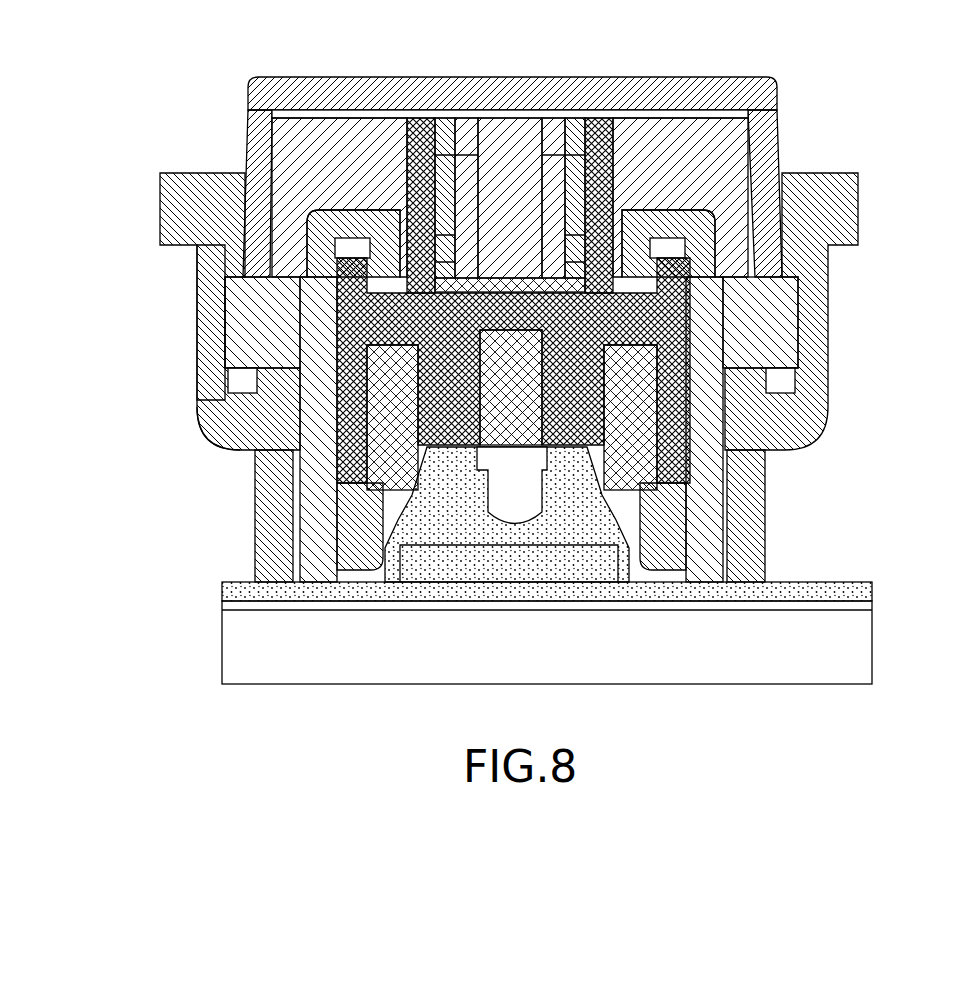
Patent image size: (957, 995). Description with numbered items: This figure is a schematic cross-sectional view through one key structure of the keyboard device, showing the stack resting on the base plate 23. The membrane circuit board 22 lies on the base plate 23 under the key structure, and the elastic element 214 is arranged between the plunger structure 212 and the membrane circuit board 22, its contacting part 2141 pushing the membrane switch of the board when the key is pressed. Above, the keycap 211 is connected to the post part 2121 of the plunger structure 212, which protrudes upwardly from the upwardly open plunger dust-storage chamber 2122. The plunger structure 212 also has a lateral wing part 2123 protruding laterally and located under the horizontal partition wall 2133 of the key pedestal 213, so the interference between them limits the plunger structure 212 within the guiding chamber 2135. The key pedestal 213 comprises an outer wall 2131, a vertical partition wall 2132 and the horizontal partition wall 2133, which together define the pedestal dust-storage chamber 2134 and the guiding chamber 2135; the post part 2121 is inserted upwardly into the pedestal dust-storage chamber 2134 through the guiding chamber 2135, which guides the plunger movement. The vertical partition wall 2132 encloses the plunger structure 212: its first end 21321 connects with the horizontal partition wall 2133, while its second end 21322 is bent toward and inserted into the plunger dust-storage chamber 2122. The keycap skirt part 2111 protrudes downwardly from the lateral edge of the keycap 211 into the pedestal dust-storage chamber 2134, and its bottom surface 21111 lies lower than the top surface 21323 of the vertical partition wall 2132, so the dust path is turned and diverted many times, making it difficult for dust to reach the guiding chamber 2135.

The keycap 211 is at (547, 83).
The plunger structure 212 is at (510, 290).
The post part 2121 is at (625, 110).
The plunger dust-storage chamber 2122 is at (745, 172).
The keycap skirt part 2111 is at (256, 172).
The bottom surface of keycap skirt part 21111 is at (742, 310).
The key pedestal 213 is at (182, 213).
The outer wall 2131 is at (205, 293).
The vertical partition wall 2132 is at (315, 323).
The first end of vertical partition wall 21321 is at (305, 361).
The second end of vertical partition wall 21322 is at (345, 225).
The top surface of vertical partition wall 21323 is at (367, 207).
The horizontal partition wall 2133 is at (268, 382).
The pedestal dust-storage chamber 2134 is at (770, 245).
The guiding chamber 2135 is at (710, 527).
The lateral wing part 2123 is at (323, 458).
The elastic element 214 is at (686, 402).
The contacting part 2141 is at (505, 505).
The membrane circuit board 22 is at (855, 599).
The base plate 23 is at (857, 662).